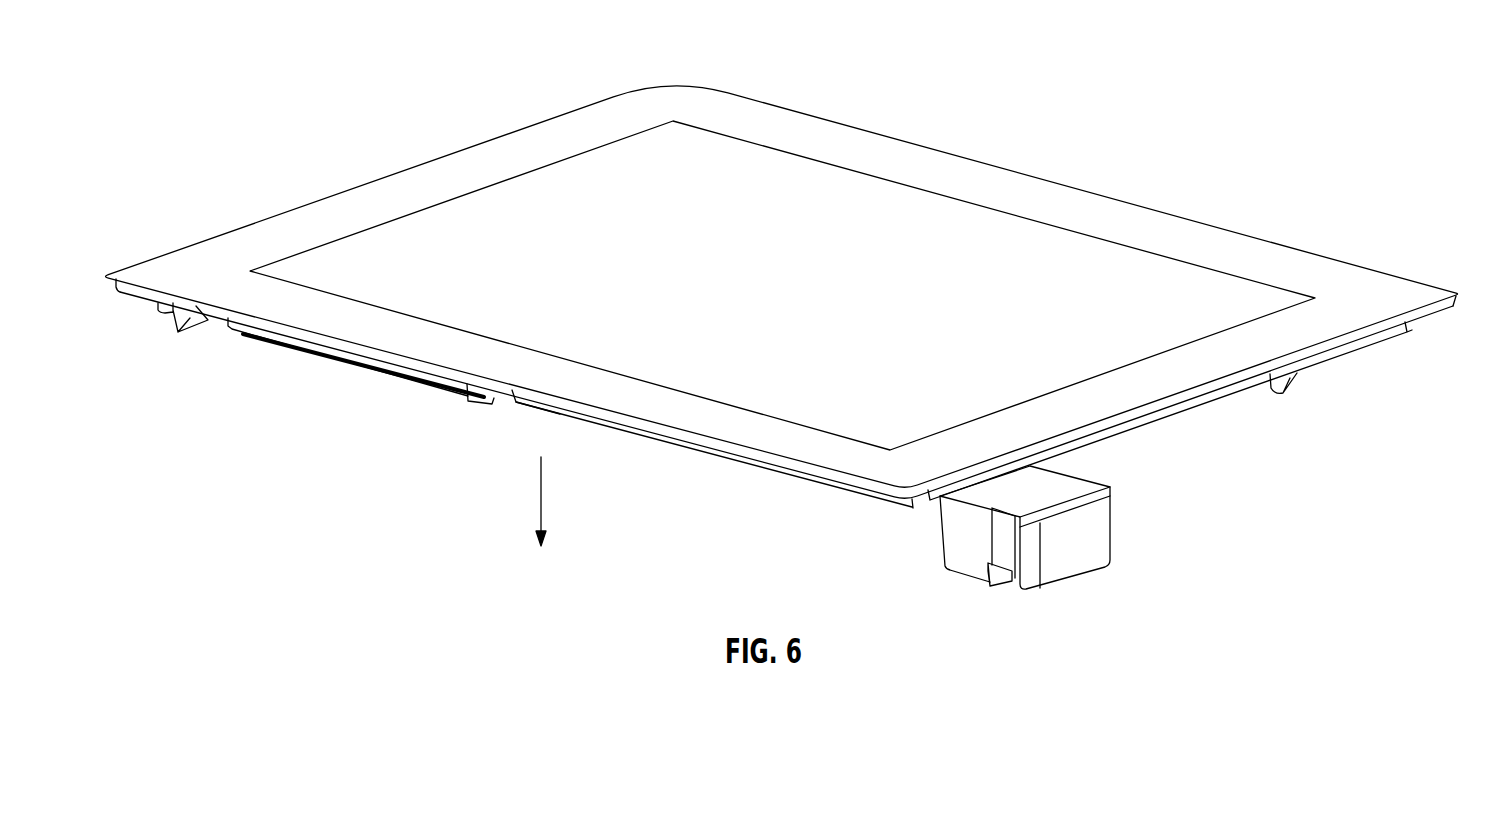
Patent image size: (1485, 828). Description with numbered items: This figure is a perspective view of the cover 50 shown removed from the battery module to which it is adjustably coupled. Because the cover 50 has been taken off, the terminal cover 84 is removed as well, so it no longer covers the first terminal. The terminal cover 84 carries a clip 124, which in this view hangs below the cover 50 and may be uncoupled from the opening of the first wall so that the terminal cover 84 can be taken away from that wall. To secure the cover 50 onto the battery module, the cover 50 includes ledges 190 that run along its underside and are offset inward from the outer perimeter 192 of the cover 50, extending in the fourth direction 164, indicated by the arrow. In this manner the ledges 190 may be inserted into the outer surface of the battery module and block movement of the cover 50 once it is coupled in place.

The cover 50 is at (948, 182).
The terminal cover 84 is at (1077, 535).
The clip 124 is at (1006, 527).
The fourth direction 164 is at (540, 503).
The ledges 190 is at (730, 460).
The outer perimeter 192 is at (517, 388).